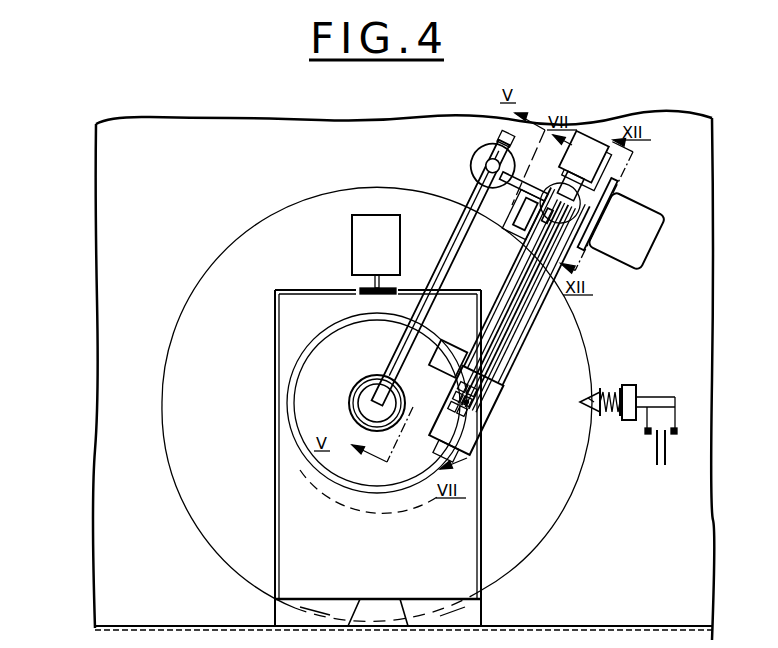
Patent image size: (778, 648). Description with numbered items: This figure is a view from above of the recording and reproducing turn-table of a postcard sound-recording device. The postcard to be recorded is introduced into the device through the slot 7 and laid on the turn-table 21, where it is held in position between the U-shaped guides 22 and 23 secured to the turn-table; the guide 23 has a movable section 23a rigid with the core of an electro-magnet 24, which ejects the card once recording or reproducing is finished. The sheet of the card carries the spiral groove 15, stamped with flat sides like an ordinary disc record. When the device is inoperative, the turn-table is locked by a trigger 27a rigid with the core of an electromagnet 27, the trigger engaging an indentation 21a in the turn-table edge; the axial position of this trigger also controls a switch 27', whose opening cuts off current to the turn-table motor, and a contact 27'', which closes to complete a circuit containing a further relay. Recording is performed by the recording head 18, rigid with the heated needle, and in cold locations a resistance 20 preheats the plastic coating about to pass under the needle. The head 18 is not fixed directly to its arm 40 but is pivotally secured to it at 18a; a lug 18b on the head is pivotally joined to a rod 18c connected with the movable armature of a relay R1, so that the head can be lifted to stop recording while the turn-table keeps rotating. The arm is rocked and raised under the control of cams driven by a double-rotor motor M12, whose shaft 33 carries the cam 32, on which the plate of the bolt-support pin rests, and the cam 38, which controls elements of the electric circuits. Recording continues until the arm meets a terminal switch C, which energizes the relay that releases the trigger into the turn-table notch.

The slot 7 is at (430, 612).
The spiral groove 15 is at (290, 392).
The recording head 18 is at (480, 423).
The pivot 18a is at (507, 358).
The lug 18b is at (476, 406).
The rod 18c is at (557, 221).
The resistance 20 is at (452, 342).
The turn-table 21 is at (520, 553).
The indentation 21a is at (582, 410).
The U-shaped guide 22 is at (276, 499).
The U-shaped guide 23 is at (300, 288).
The movable section 23a is at (360, 293).
The electro-magnet 24 is at (370, 228).
The electromagnet 27 is at (649, 388).
The trigger 27a is at (601, 393).
The switch 27' is at (637, 459).
The contact 27'' is at (665, 466).
The cam 32 is at (497, 140).
The shaft 33 is at (530, 183).
The cam 38 is at (618, 186).
The arm 40 is at (540, 298).
The terminal switch C is at (522, 226).
The relay R1 is at (588, 143).
The double-rotor motor M12 is at (626, 230).